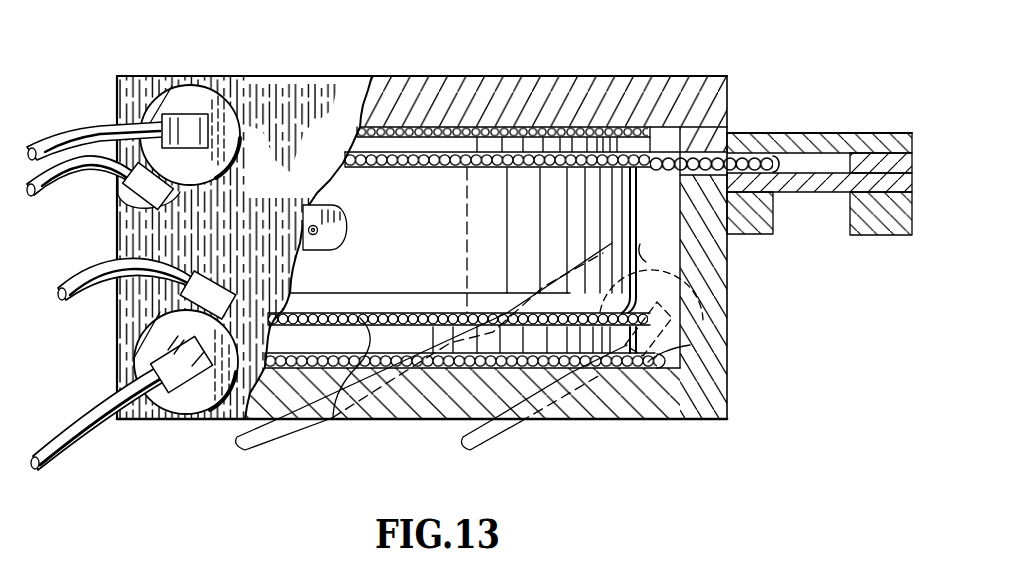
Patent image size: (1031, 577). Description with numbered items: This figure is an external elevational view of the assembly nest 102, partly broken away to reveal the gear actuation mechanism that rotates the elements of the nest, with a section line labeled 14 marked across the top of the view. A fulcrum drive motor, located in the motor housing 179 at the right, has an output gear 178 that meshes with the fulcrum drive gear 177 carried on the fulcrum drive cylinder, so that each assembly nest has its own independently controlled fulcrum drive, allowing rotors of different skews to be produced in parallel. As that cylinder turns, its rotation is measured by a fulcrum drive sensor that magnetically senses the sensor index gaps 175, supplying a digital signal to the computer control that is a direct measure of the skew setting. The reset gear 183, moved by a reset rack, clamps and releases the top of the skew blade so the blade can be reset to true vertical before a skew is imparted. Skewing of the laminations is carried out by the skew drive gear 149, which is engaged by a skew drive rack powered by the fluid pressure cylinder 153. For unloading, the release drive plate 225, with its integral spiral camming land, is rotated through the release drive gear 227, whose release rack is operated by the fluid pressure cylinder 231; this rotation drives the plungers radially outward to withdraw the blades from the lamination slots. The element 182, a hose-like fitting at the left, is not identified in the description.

The section line 14- 14 is at (737, 45).
The assembly nest 102 is at (420, 228).
The skew drive gear 149 is at (690, 345).
The fluid pressure cylinder 153 is at (143, 408).
The sensor index gaps 175 is at (355, 241).
The fulcrum drive gear 177 is at (398, 168).
The output gear 178 is at (780, 168).
The motor housing 179 is at (808, 133).
The hose 182 is at (122, 210).
The reset gear 183 is at (620, 127).
The release drive plate 225 is at (328, 347).
The release drive gear 227 is at (332, 419).
The fluid pressure cylinder 231 is at (728, 318).